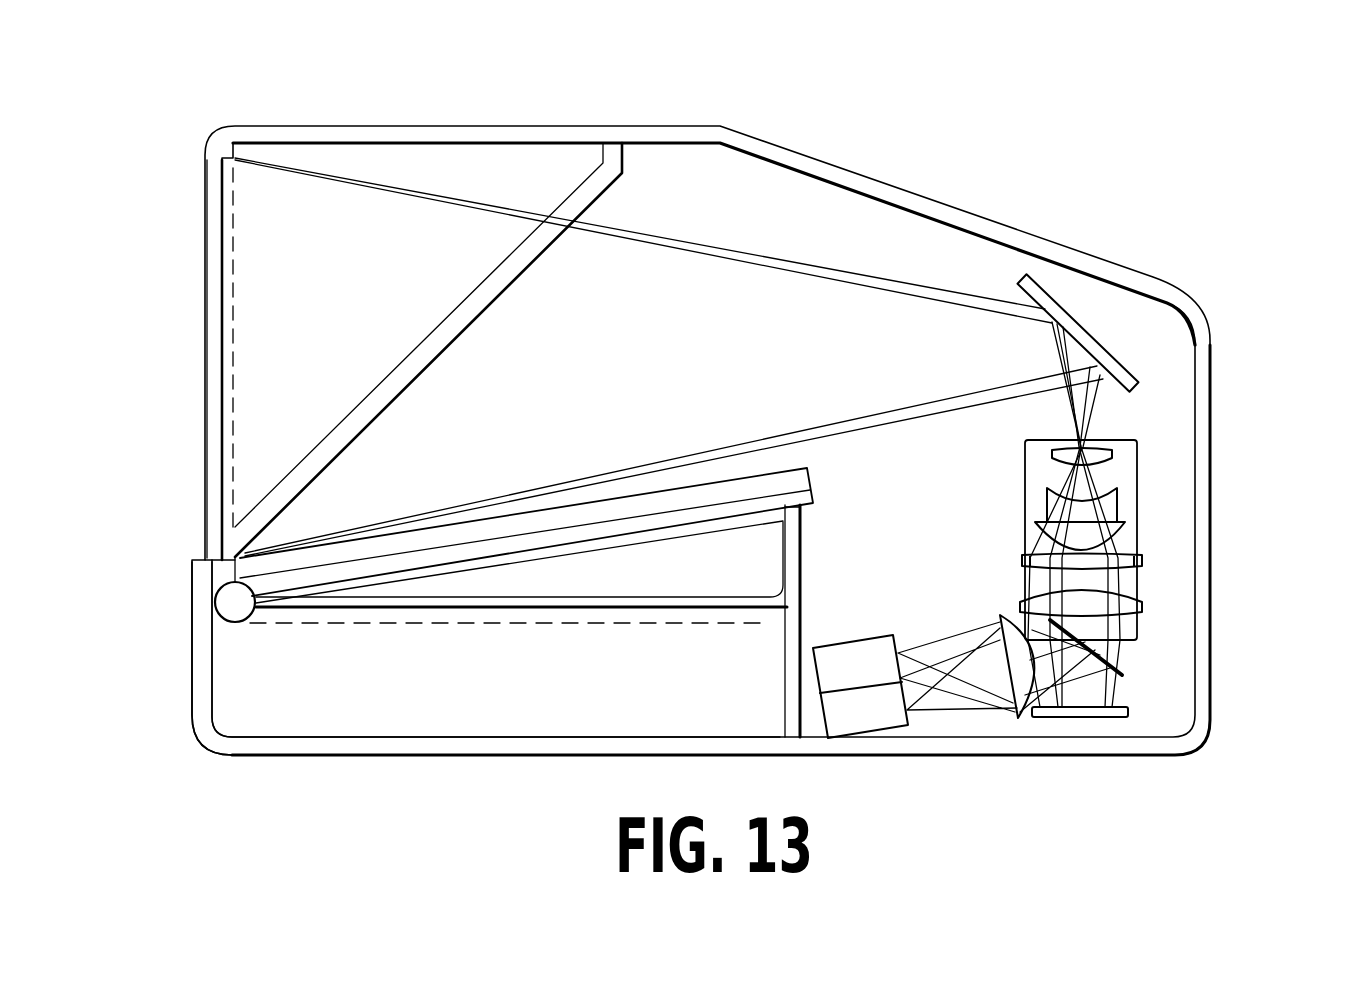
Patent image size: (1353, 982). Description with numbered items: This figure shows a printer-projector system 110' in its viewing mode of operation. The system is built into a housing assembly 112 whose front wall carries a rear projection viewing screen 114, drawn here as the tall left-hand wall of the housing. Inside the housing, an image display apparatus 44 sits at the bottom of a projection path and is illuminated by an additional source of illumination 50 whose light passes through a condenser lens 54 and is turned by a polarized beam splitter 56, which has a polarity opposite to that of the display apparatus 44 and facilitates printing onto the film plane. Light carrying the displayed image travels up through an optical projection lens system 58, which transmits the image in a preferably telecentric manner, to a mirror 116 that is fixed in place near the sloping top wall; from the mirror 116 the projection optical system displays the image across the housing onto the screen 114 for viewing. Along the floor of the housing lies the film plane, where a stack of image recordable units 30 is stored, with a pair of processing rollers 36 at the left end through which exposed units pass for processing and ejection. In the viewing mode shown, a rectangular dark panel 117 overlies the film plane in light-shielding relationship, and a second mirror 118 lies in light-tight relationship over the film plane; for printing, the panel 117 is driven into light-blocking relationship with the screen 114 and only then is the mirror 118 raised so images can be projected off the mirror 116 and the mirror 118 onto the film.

The printer-projector system 110' is at (1130, 73).
The housing assembly 112 is at (1213, 432).
The rear projection viewing screen 114 is at (236, 297).
The processing rollers 36 is at (252, 690).
The image recordable units 30 is at (415, 630).
The rectangular dark panel 117 is at (663, 490).
The second mirror 118 is at (673, 537).
The source of illumination 50 is at (860, 632).
The condenser lens 54 is at (1000, 612).
The polarized beam splitter 56 is at (1127, 668).
The image display apparatus 44 is at (1132, 705).
The optical projection lens system 58 is at (1140, 527).
The mirror 116 is at (1073, 318).